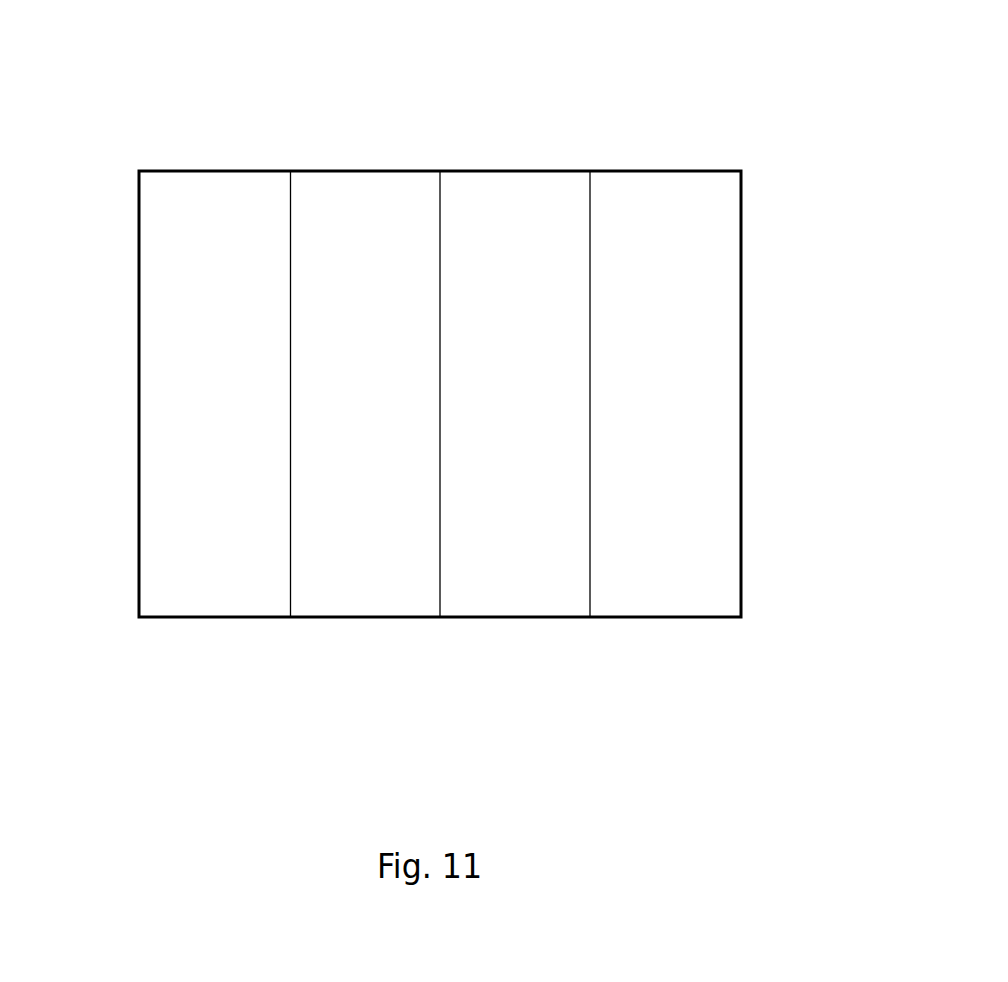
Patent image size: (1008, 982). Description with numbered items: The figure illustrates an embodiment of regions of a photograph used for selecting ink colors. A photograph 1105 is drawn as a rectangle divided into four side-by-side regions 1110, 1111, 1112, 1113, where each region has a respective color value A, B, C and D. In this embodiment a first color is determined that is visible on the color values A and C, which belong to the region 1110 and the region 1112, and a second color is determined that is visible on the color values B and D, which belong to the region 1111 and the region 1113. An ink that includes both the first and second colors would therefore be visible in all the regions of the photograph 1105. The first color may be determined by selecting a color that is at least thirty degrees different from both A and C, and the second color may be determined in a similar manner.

The photograph 1105 is at (91, 606).
The region 1110 is at (237, 192).
The region 1111 is at (382, 565).
The region 1112 is at (494, 573).
The region 1113 is at (650, 587).